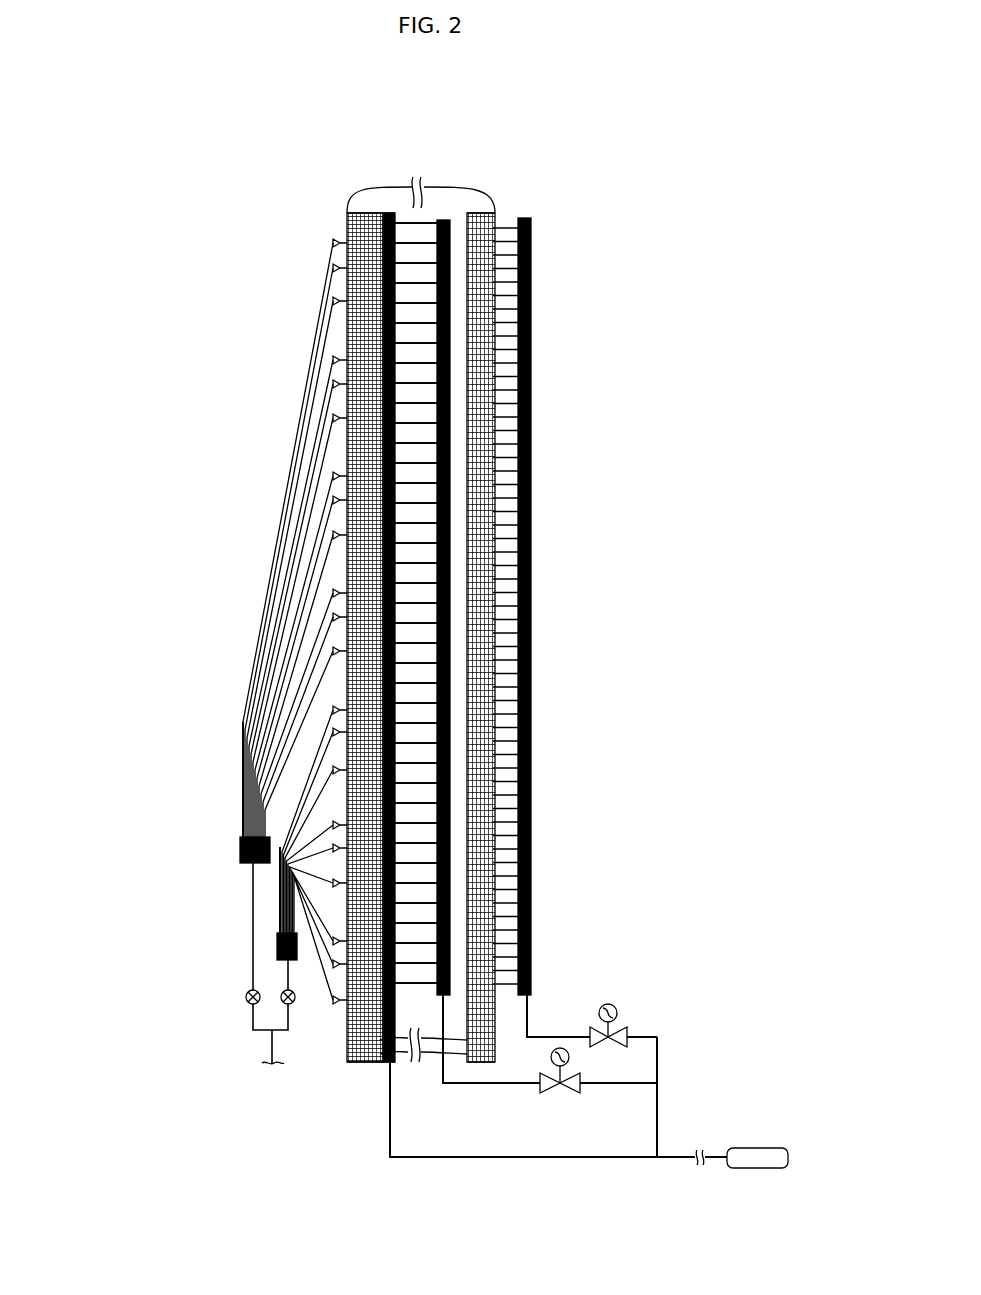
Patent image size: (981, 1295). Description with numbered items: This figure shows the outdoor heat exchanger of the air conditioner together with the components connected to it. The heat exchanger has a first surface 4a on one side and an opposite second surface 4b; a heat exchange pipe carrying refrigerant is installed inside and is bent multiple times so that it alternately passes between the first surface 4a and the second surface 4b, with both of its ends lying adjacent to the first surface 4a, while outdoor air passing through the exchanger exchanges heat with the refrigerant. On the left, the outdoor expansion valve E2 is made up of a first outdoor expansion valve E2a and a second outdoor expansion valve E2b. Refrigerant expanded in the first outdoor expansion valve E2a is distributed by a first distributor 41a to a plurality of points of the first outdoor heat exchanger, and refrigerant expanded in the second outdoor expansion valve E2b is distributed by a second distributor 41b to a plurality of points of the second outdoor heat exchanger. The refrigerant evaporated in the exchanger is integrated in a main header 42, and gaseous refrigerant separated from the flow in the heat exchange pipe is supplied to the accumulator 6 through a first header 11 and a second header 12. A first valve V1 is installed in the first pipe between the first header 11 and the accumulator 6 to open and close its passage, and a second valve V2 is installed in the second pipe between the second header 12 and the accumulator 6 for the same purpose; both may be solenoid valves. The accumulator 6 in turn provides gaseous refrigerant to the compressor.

The first surface 4a is at (348, 215).
The second surface 4b is at (462, 216).
The main header 42 is at (385, 212).
The second header 12 is at (445, 218).
The first header 11 is at (529, 258).
The first distributor 41a is at (240, 852).
The second distributor 41b is at (277, 950).
The first outdoor expansion valve E2a is at (246, 1000).
The second outdoor expansion valve E2b is at (288, 1005).
The outdoor expansion valve E2 is at (143, 1072).
The first valve V1 is at (617, 1005).
The second valve V2 is at (561, 1048).
The accumulator 6 is at (757, 1148).